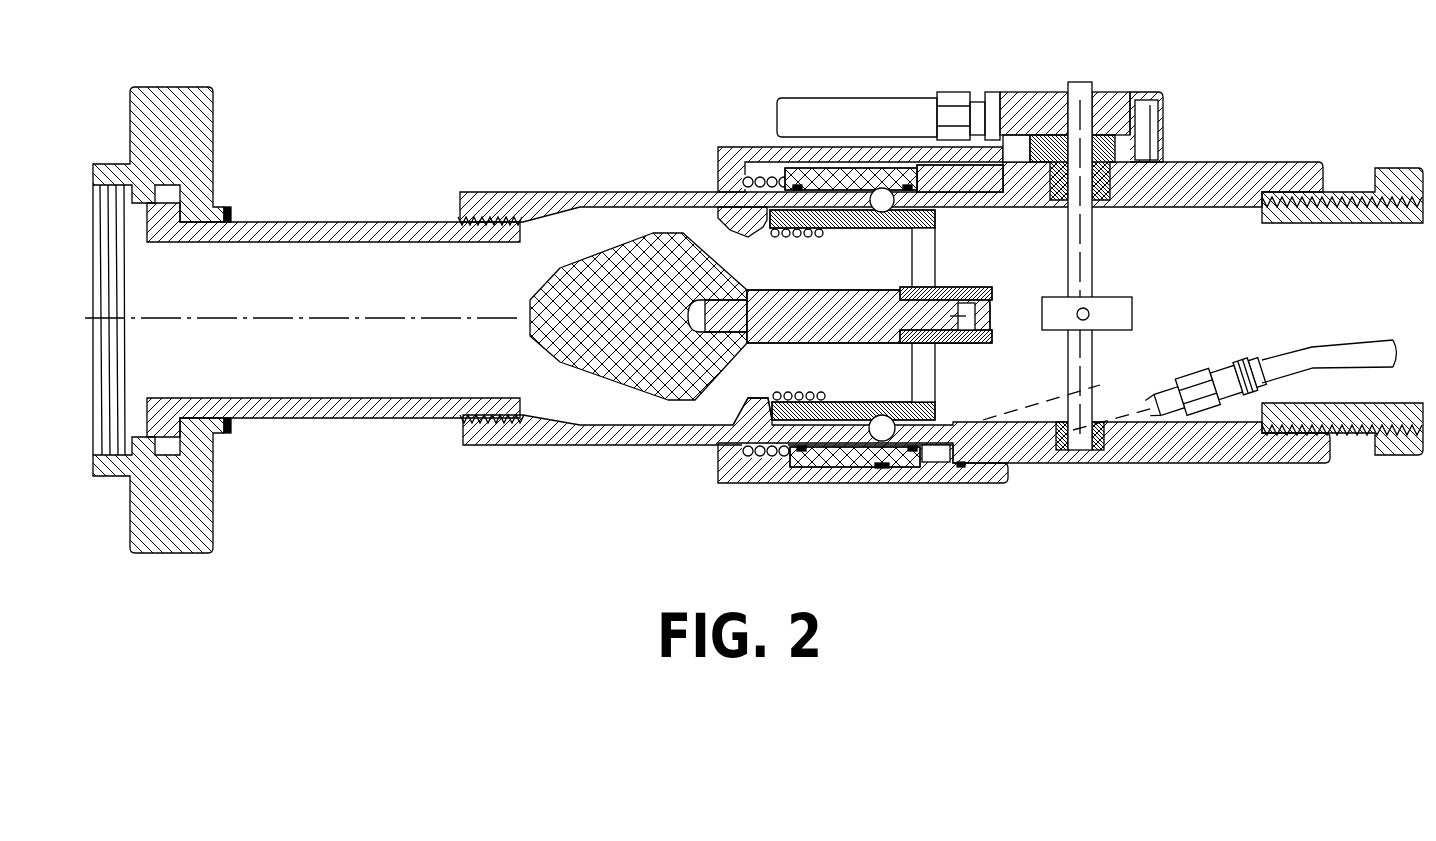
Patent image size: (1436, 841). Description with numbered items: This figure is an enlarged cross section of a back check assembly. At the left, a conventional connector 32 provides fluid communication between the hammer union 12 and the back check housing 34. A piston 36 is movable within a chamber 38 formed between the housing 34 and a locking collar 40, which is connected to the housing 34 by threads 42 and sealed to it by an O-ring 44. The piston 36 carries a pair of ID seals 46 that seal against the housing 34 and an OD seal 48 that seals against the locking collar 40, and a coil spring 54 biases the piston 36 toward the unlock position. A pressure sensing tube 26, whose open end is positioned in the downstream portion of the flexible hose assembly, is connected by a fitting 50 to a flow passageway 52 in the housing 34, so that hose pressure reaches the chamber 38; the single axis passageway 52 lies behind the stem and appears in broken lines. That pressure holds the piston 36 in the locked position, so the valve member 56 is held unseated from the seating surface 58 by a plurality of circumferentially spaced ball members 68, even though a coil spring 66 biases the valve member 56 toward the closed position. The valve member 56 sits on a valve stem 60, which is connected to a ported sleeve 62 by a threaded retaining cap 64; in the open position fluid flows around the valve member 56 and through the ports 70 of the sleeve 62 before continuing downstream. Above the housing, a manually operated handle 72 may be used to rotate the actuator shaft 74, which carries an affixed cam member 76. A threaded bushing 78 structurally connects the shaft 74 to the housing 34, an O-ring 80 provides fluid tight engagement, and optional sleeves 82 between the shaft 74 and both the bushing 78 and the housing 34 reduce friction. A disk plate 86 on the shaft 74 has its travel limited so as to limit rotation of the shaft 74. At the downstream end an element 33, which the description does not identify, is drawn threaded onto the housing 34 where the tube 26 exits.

The hammer union 12 is at (165, 92).
The connector 32 is at (270, 222).
The back check housing 34 is at (510, 215).
The manually operated handle 72 is at (868, 115).
The disk plate 86 is at (1040, 100).
The actuator shaft 74 is at (1086, 92).
The threaded bushing 78 is at (1152, 150).
The end nut 33 is at (1388, 182).
The coil spring 66 is at (777, 237).
The ball members 68 is at (880, 212).
The threaded retaining cap 64 is at (950, 292).
The sleeves 82 is at (1063, 205).
The O-ring 80 is at (1102, 205).
The cam member 76 is at (1108, 316).
The fitting 50 is at (1217, 380).
The pressure sensing tube 26 is at (1372, 355).
The valve member 56 is at (588, 340).
The seating surface 58 is at (742, 398).
The valve stem 60 is at (822, 335).
The ported sleeve 62 is at (863, 410).
The ports 70 is at (920, 372).
The flow passageway 52 is at (1118, 412).
The locking collar 40 is at (716, 458).
The coil spring 54 is at (757, 458).
The ID seals 46 is at (800, 450).
The piston 36 is at (838, 455).
The OD seal 48 is at (882, 462).
The chamber 38 is at (935, 458).
The O-ring 44 is at (962, 468).
The threads 42 is at (1003, 468).